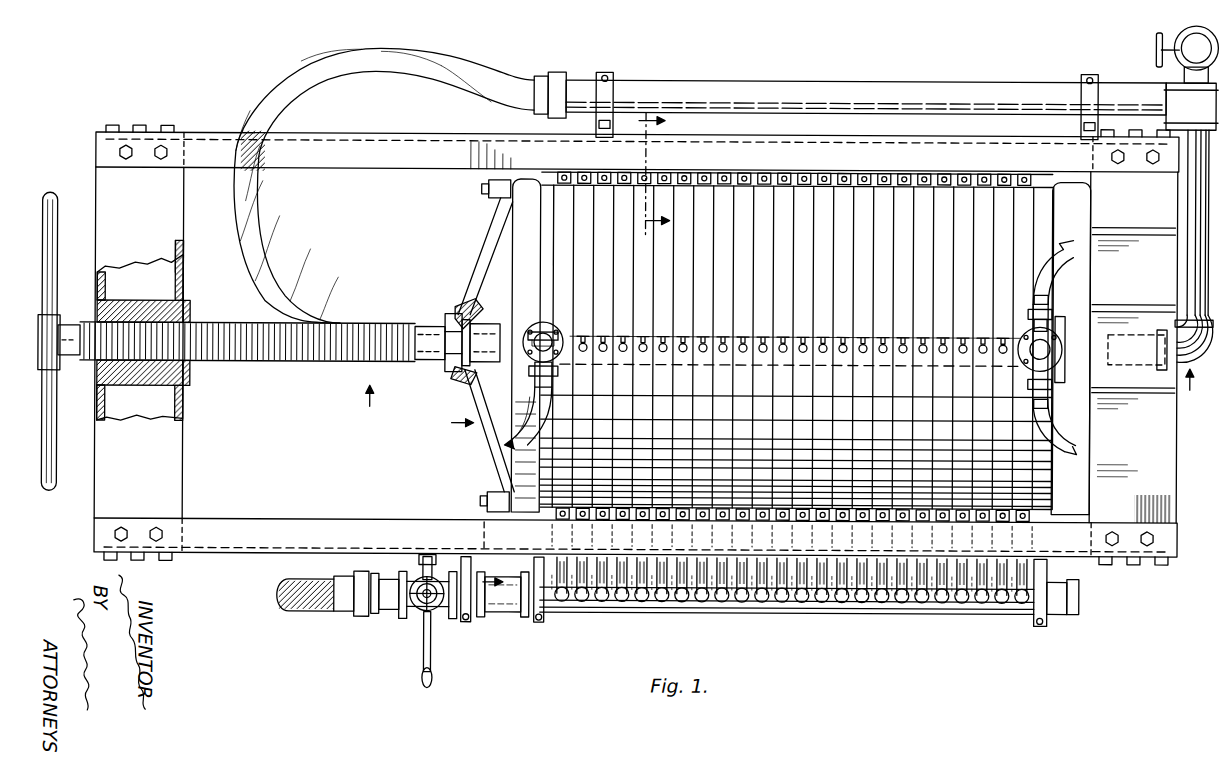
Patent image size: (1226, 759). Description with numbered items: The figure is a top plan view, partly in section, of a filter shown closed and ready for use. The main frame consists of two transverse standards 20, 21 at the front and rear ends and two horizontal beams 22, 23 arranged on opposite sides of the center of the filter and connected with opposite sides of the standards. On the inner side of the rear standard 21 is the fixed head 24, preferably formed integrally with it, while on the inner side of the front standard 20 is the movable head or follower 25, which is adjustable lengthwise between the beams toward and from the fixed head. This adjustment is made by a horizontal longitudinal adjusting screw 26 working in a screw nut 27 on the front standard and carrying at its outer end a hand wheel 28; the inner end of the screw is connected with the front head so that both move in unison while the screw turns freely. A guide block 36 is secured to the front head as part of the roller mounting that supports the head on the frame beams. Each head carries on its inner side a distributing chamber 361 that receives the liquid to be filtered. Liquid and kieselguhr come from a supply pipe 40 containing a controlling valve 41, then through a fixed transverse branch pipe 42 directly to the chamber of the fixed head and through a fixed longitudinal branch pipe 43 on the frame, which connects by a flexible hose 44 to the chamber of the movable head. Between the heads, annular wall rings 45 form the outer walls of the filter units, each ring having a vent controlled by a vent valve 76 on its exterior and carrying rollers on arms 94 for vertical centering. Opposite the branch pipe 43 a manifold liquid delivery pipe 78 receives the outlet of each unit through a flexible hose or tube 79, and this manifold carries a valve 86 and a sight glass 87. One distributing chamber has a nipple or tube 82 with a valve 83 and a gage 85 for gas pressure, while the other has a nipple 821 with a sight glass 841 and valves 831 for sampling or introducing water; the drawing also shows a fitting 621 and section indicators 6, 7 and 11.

The transverse standard 20 is at (139, 342).
The transverse standard 21 is at (1151, 348).
The horizontal beam 22 is at (637, 148).
The horizontal beam 23 is at (635, 541).
The fixed head 24 is at (1071, 348).
The movable head or follower 25 is at (526, 345).
The adjusting screw 26 is at (272, 362).
The screw nut 27 is at (187, 378).
The hand wheel 28 is at (50, 193).
The guide block 36 is at (492, 194).
The distributing chamber 361 is at (544, 260).
The supply pipe 40 is at (1173, 38).
The controlling valve 41 is at (1178, 48).
The transverse branch pipe 42 is at (1180, 183).
The longitudinal branch pipe 43 is at (822, 78).
The flexible hose 44 is at (334, 64).
The annular wall ring 45 is at (797, 347).
The section line 6 is at (770, 379).
The section line 7 is at (647, 181).
The section line 11 is at (482, 492).
The vent valve 76 is at (725, 334).
The manifold liquid delivery pipe 78 is at (878, 610).
The flexible hose or tube 79 is at (965, 594).
The nipple or tube 82 is at (518, 444).
The valve 83 is at (550, 372).
The gage 85 is at (546, 330).
The valve 86 is at (412, 605).
The sight glass 87 is at (506, 612).
The arm 94 is at (870, 171).
The nut 621 is at (1028, 342).
The nipple or tube 821 is at (1041, 280).
The valve 831 is at (1030, 316).
The sight glass 841 is at (1030, 358).